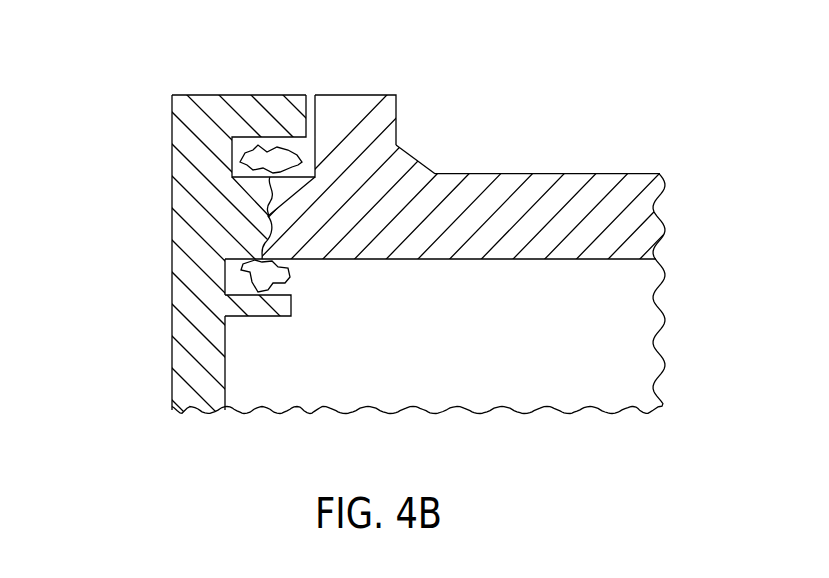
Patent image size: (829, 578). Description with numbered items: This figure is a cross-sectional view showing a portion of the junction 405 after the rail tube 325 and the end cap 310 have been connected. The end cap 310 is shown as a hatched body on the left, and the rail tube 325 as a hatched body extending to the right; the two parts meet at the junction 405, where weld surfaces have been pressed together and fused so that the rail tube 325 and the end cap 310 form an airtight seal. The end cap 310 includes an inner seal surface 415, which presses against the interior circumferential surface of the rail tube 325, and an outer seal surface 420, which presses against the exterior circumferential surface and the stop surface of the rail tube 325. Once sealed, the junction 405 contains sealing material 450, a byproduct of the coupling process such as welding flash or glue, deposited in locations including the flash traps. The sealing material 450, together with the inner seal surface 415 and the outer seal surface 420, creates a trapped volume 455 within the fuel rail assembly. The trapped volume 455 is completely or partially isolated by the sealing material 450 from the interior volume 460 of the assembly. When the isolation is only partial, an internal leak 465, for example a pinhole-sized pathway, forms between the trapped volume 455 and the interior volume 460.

The end cap 310 is at (172, 125).
The rail tube 325 is at (607, 173).
The junction 405 is at (428, 166).
The inner seal surface 415 is at (263, 316).
The outer seal surface 420 is at (298, 94).
The sealing material 450 is at (281, 133).
The trapped volume 455 is at (234, 288).
The interior volume 460 is at (532, 328).
The internal leak 465 is at (310, 291).